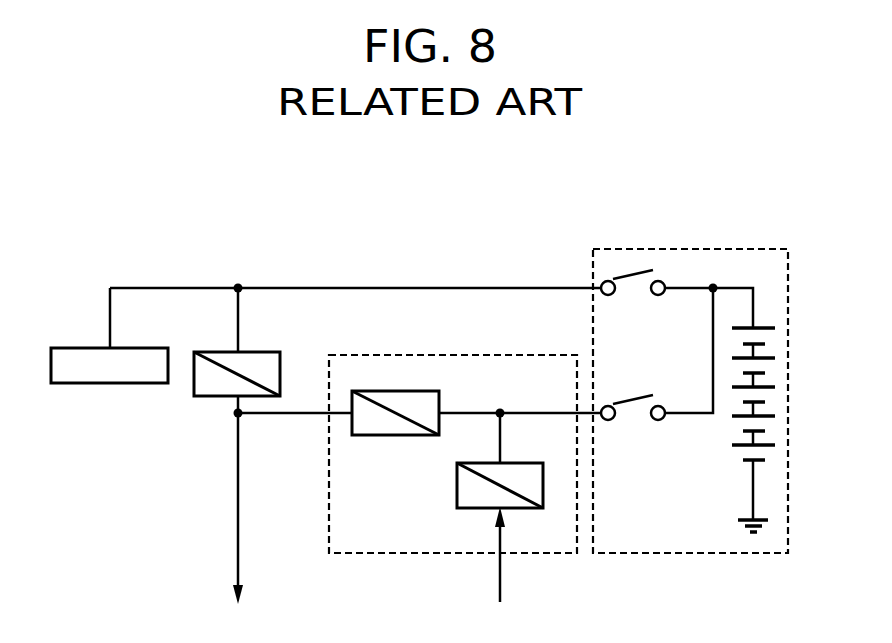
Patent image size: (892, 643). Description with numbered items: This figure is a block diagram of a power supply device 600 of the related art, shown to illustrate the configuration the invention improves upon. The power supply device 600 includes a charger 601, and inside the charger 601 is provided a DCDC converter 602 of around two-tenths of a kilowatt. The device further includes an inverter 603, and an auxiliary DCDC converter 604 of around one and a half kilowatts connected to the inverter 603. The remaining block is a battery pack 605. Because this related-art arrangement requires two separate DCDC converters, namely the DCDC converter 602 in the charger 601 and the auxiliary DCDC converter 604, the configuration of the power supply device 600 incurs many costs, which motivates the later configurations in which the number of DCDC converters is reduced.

The power supply device 600 is at (92, 252).
The charger 601 is at (553, 340).
The DCDC converter 602 is at (392, 388).
The inverter 603 is at (152, 334).
The auxiliary DCDC converter 604 is at (256, 351).
The battery pack 605 is at (760, 233).